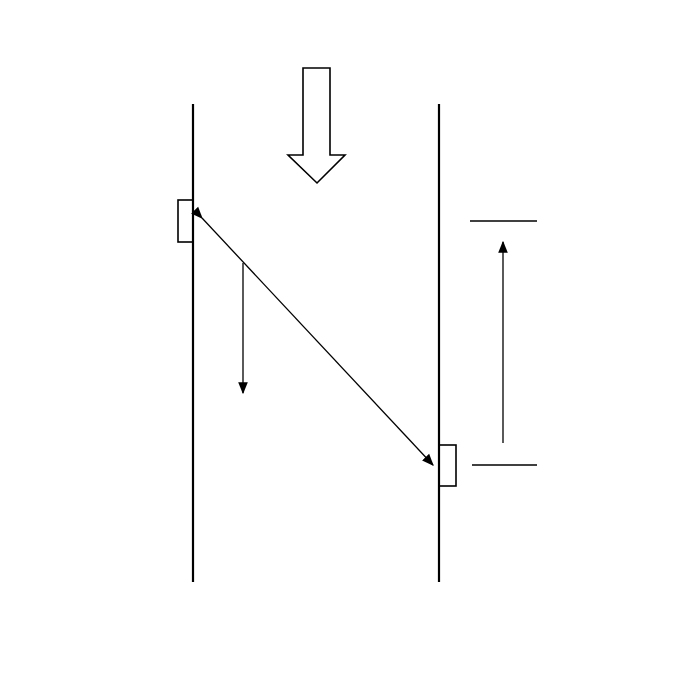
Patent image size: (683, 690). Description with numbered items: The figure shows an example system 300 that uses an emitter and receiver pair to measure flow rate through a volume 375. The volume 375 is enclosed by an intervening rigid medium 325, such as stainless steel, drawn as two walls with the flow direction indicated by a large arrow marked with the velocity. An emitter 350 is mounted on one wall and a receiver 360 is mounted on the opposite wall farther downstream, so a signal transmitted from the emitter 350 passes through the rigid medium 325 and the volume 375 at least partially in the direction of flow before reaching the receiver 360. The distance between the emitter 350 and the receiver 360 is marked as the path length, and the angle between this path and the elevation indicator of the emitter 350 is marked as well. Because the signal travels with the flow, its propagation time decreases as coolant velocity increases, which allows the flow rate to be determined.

The system 300 is at (488, 88).
The intervening rigid medium 325 is at (193, 440).
The emitter 350 is at (178, 222).
The receiver 360 is at (456, 477).
The volume 375 is at (338, 233).